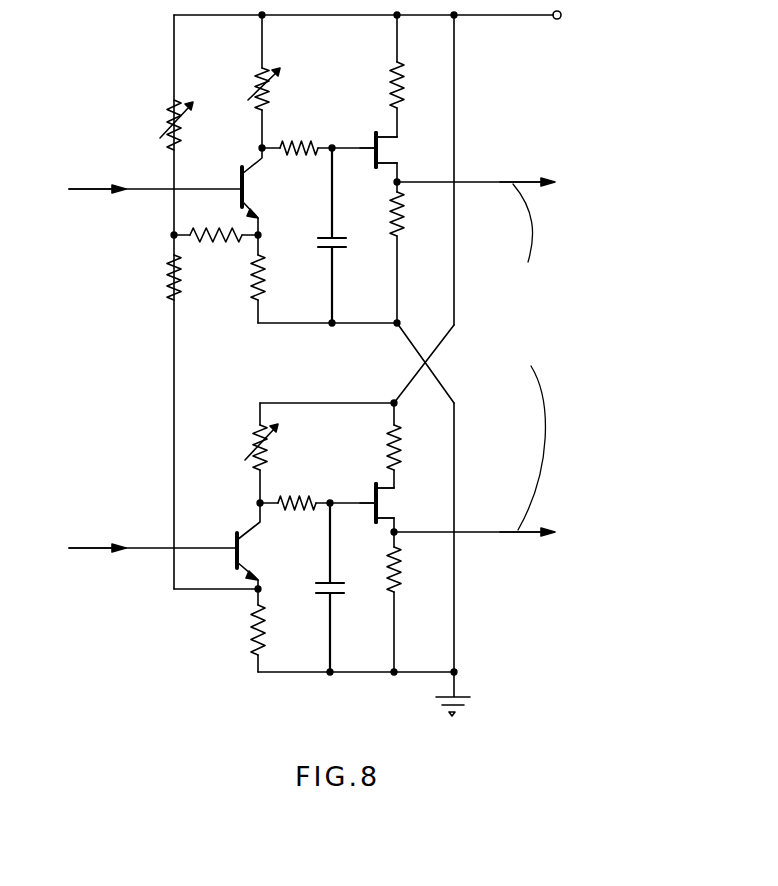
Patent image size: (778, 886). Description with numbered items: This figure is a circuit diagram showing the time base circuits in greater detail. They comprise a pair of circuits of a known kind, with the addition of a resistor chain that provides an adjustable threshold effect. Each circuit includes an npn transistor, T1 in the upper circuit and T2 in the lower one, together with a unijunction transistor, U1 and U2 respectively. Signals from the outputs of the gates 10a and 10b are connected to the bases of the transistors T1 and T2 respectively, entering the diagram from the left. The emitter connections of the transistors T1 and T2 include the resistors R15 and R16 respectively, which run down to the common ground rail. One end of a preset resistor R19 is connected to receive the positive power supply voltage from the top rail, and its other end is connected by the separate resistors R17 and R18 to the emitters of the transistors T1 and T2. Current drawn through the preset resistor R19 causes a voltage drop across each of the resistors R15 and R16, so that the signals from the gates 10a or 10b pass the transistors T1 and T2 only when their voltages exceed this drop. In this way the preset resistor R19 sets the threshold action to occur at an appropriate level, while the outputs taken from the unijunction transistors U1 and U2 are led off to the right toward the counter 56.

The resistor R15 is at (286, 277).
The resistor R16 is at (232, 630).
The resistor R17 is at (216, 254).
The resistor R18 is at (143, 277).
The preset resistor R19 is at (152, 125).
The npn transistor T1 is at (265, 191).
The npn transistor T2 is at (261, 546).
The unijunction transistor U1 is at (403, 150).
The unijunction transistor U2 is at (399, 503).
The gate 10a is at (82, 192).
The gate 10b is at (82, 546).
The counter 56 is at (550, 357).